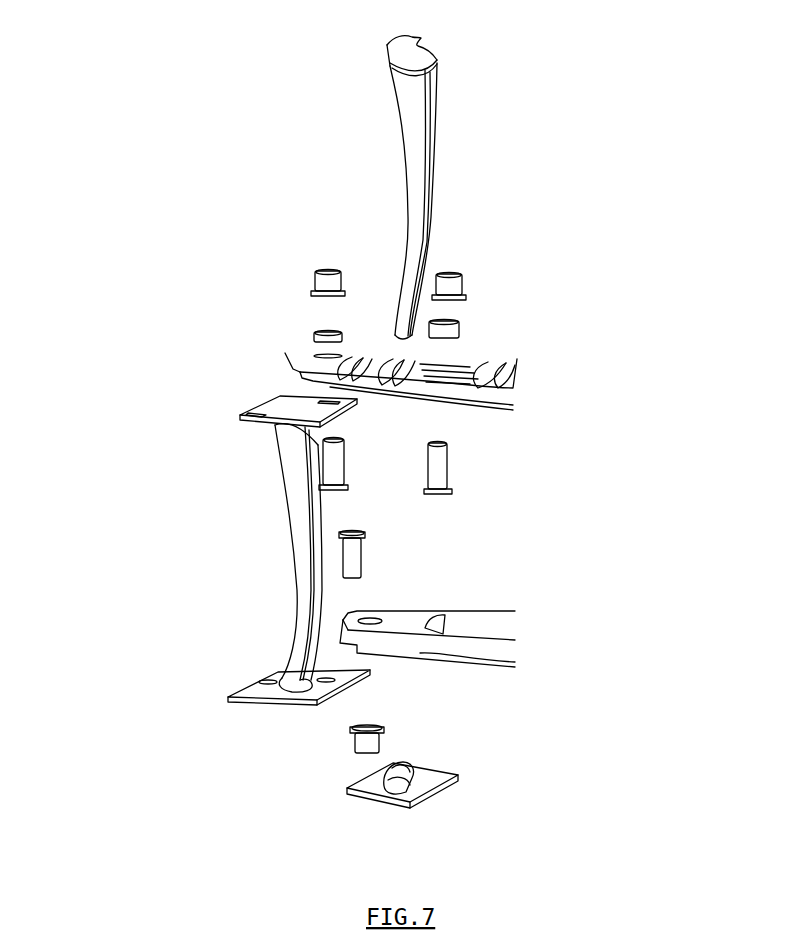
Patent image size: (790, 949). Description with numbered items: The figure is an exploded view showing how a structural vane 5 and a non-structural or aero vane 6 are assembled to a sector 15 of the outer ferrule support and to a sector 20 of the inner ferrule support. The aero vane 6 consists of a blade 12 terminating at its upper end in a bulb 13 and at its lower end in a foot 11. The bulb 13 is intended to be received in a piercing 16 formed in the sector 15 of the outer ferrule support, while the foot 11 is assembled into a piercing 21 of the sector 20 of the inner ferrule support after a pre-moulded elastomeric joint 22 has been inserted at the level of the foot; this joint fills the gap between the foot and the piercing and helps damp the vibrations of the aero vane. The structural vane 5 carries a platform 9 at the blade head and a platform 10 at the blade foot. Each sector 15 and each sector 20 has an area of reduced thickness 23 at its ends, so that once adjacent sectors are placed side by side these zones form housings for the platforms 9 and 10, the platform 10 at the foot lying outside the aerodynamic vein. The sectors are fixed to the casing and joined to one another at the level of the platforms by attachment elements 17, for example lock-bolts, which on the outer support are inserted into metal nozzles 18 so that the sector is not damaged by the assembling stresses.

The structural vane 5 is at (263, 524).
The non-structural or aero vane 6 is at (372, 172).
The platform of the structural vane at the blade head 9 is at (277, 410).
The platform of the structural vane at the blade foot 10 is at (260, 695).
The foot of the aero vane 11 is at (400, 336).
The blade of the aero vane 12 is at (438, 196).
The bulb of the aero vane 13 is at (433, 70).
The sector of the outer ferrule support 15 is at (500, 446).
The piercing in the sector of the outer ferrule support 16 is at (513, 373).
The attachment elements 17 is at (457, 283).
The metal nozzle 18 is at (285, 353).
The sector of the inner ferrule support 20 is at (537, 695).
The piercing in the sector of the inner ferrule support 21 is at (440, 625).
The pre-moulded joint 22 is at (383, 783).
The area of reduced thickness 23 is at (300, 372).